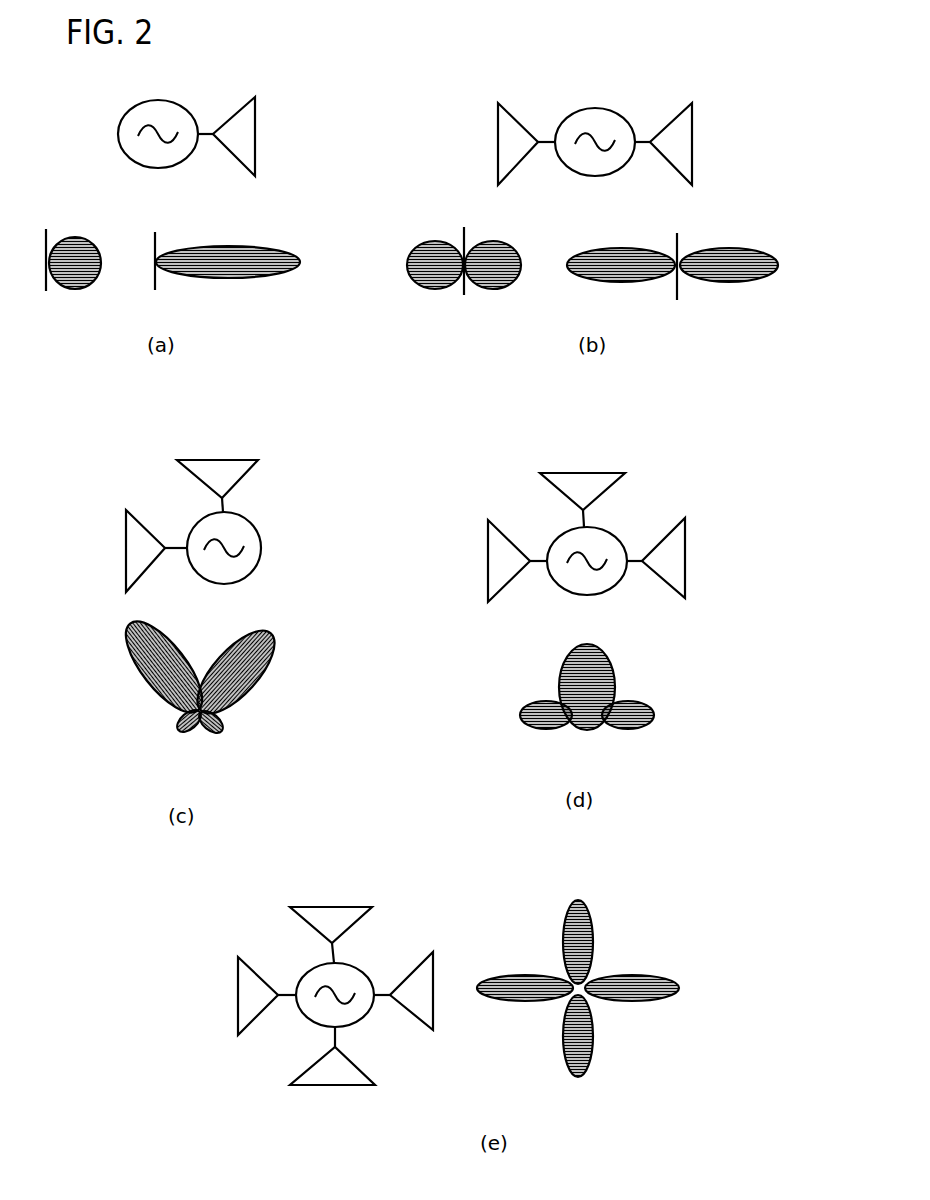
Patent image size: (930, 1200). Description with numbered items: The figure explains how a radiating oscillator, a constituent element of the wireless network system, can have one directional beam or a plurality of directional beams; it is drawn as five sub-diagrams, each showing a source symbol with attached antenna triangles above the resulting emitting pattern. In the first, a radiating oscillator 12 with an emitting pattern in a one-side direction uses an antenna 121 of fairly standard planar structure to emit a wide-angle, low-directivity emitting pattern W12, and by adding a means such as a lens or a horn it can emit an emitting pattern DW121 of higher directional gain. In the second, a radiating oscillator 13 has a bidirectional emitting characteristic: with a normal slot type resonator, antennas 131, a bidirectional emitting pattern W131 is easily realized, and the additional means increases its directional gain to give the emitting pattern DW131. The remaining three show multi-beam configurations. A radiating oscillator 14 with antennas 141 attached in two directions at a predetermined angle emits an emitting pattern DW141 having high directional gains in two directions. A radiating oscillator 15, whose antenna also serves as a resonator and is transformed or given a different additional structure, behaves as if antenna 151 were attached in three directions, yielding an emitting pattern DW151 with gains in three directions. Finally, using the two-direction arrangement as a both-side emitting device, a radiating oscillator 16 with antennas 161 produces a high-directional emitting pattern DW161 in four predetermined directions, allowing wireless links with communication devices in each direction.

The radiating oscillator 12 is at (111, 134).
The antenna 121 is at (255, 134).
The wide-angle emitting pattern W12 is at (68, 301).
The emitting pattern DW121 is at (198, 293).
The radiating oscillator 13 is at (593, 109).
The antennas 131 is at (498, 148).
The bidirectional emitting pattern W131 is at (441, 300).
The emitting pattern DW131 is at (700, 291).
The radiating oscillator 14 is at (262, 530).
The antennas 141 is at (126, 552).
The emitting pattern DW141 is at (140, 686).
The radiating oscillator 15 is at (617, 535).
The antenna 151 is at (685, 554).
The emitting pattern DW151 is at (633, 686).
The radiating oscillator 16 is at (363, 965).
The antennas 161 is at (238, 1010).
The emitting pattern DW161 is at (612, 1026).